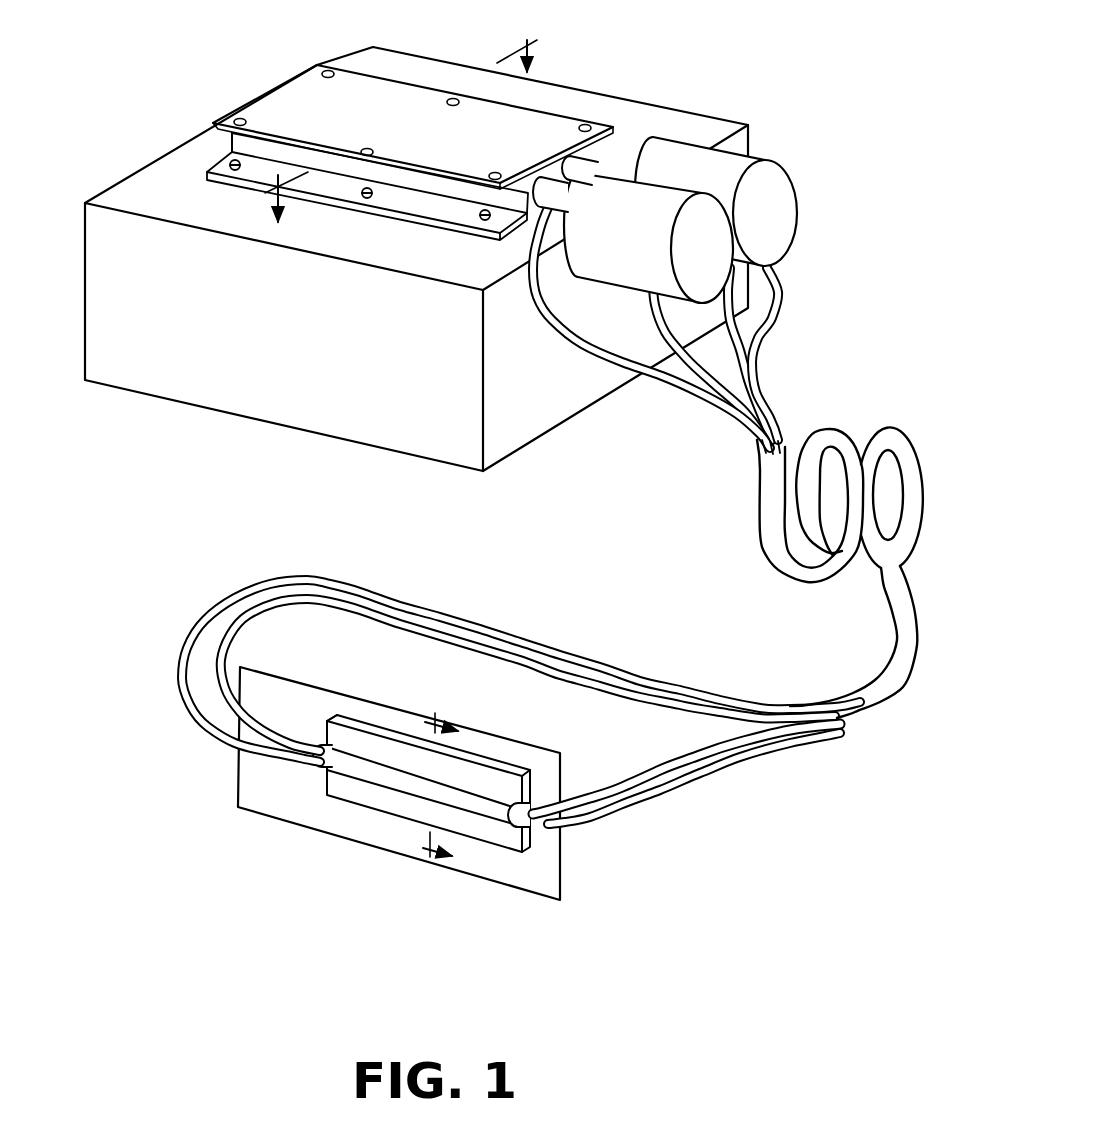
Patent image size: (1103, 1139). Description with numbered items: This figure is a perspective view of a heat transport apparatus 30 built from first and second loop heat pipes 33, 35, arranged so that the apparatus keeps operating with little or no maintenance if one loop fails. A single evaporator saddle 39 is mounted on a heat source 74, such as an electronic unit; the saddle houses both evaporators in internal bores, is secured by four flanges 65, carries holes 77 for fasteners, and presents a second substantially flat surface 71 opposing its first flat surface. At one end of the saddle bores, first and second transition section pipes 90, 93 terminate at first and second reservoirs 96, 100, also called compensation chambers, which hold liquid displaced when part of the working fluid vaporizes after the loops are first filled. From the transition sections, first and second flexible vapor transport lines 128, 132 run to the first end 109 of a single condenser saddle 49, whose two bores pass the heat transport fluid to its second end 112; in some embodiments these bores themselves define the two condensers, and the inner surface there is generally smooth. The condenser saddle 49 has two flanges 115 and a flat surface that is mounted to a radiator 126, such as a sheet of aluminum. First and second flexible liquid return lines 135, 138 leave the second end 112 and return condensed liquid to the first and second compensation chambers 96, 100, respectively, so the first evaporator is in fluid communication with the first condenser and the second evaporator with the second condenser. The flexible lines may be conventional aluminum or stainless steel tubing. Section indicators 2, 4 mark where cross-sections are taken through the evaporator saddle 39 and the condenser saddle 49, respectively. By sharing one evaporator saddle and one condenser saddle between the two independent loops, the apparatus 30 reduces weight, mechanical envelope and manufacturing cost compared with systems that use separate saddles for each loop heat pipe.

The heat transport apparatus 30 is at (529, 796).
The first loop heat pipe 33 is at (657, 337).
The second loop heat pipe 35 is at (755, 328).
The evaporator saddle 39 is at (377, 93).
The condenser saddle 49 is at (492, 782).
The flange 65 is at (210, 128).
The second substantially flat surface 71 is at (280, 98).
The heat source 74 is at (205, 373).
The hole 77 is at (318, 68).
The first transition section pipe 90 is at (560, 200).
The second transition section pipe 93 is at (582, 168).
The first reservoir 96 is at (632, 268).
The second reservoir 100 is at (737, 168).
The first end of the condenser saddle 109 is at (327, 788).
The second end of the condenser saddle 112 is at (528, 845).
The flange 115 is at (350, 737).
The radiator 126 is at (337, 820).
The first flexible vapor transport line 128 is at (558, 332).
The second flexible vapor transport line 132 is at (743, 353).
The first flexible liquid return line 135 is at (662, 324).
The second flexible liquid return line 138 is at (777, 280).
The section line 2- 2 is at (402, 122).
The section line 4- 4 is at (434, 793).